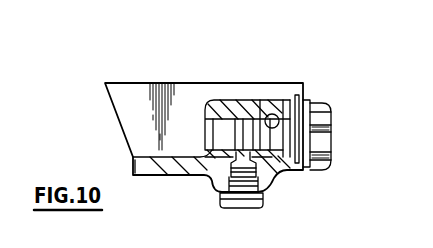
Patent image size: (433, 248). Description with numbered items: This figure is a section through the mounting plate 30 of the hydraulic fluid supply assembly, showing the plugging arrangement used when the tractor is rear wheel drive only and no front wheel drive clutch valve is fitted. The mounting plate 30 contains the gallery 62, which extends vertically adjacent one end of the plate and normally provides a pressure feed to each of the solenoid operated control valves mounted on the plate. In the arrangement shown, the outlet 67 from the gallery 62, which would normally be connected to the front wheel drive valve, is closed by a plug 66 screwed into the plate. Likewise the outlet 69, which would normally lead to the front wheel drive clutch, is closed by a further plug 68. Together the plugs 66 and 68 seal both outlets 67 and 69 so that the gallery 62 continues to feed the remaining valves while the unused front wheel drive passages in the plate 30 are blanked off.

The mounting plate 30 is at (134, 97).
The gallery 62 is at (275, 114).
The plug 66 is at (317, 137).
The outlet 67 is at (306, 120).
The plug 68 is at (243, 207).
The outlet 69 is at (228, 183).